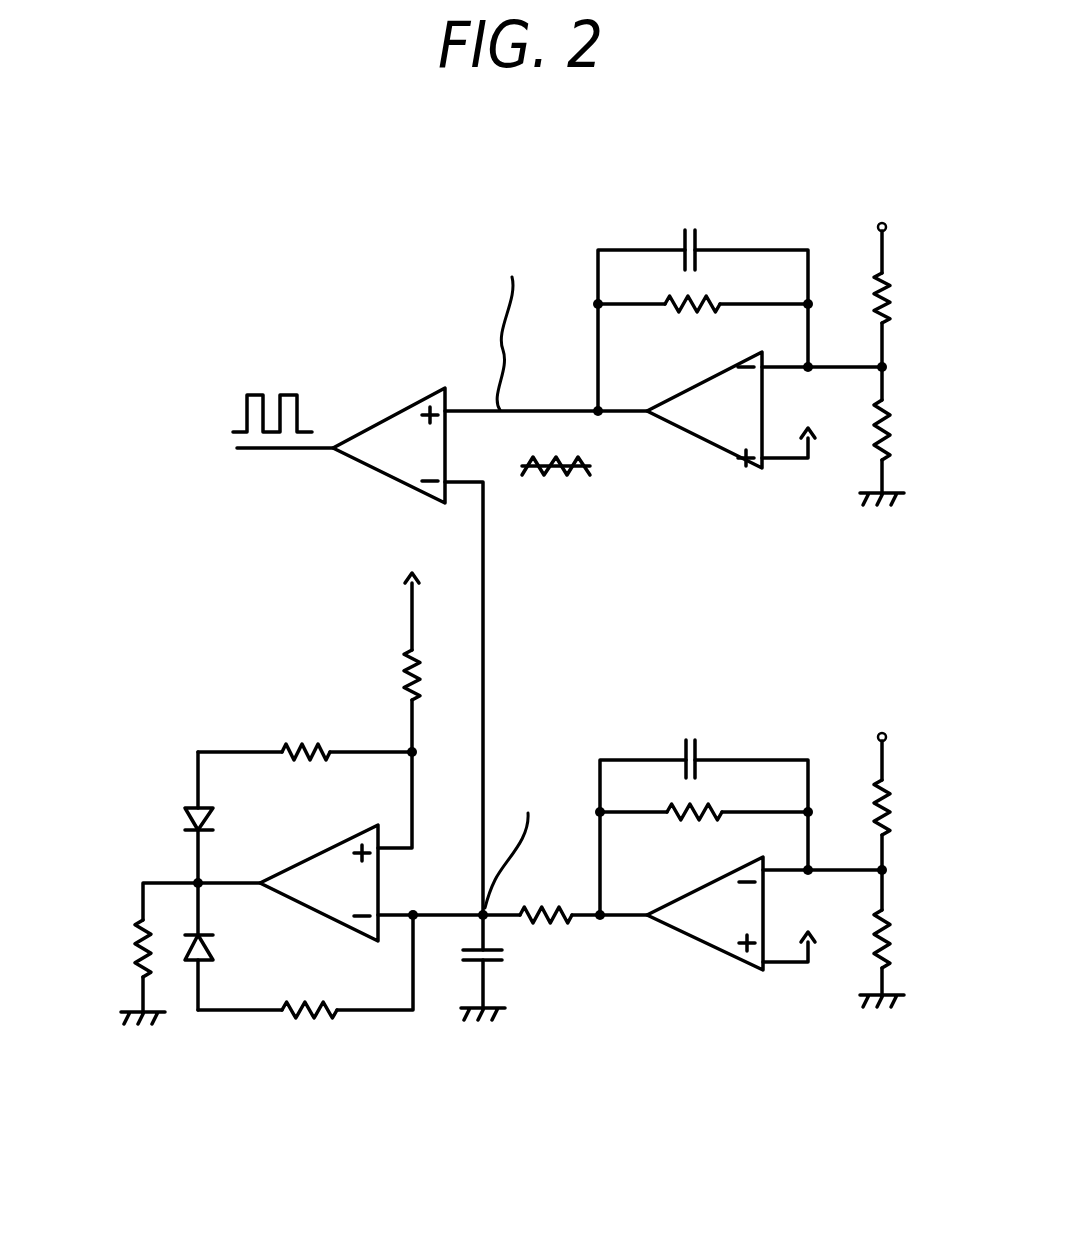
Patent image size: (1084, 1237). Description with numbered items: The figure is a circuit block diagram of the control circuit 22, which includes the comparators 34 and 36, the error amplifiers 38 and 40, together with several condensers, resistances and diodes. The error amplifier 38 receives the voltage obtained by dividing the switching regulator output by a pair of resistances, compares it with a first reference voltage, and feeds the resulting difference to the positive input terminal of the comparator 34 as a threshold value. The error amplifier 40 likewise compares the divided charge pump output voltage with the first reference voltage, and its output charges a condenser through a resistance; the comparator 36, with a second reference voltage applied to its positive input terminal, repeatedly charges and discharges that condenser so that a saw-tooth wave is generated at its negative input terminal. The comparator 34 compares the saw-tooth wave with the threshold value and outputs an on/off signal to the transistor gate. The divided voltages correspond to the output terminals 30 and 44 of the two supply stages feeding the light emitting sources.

The control circuit 22 is at (292, 322).
The output terminal 30 is at (883, 222).
The comparator 34 is at (362, 463).
The comparator 36 is at (295, 866).
The error amplifier 38 is at (717, 446).
The error amplifier 40 is at (693, 937).
The output terminal 44 is at (883, 733).